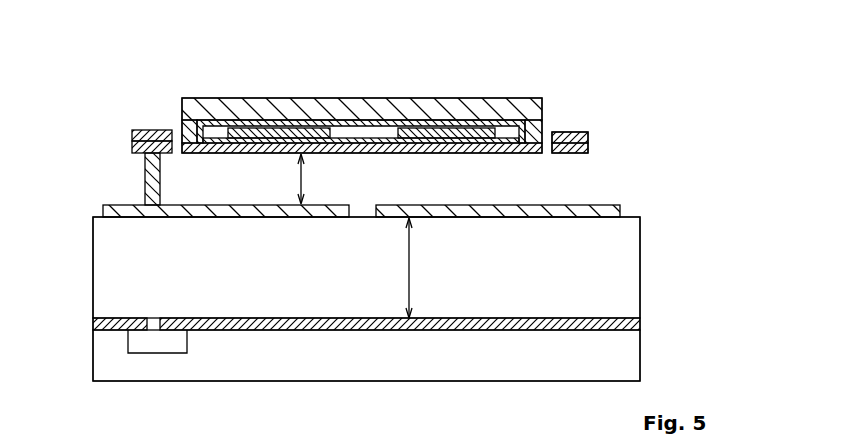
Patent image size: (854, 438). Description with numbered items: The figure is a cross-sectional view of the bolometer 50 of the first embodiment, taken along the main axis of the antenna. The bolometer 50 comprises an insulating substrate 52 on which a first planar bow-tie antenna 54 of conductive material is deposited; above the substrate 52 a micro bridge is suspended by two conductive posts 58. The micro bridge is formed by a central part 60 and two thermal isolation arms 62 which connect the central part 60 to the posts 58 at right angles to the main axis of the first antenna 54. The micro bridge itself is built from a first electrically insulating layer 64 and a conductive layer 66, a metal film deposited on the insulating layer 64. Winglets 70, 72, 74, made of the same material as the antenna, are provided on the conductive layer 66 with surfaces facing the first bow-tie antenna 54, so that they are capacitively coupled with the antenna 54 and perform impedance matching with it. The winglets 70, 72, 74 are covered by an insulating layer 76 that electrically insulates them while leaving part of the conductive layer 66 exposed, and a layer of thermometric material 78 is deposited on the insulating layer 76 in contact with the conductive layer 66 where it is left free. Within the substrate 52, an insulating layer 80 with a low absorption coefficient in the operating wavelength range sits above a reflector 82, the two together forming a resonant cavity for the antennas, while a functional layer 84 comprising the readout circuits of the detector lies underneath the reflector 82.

The bolometer 50 is at (315, 430).
The insulating substrate 52 is at (73, 217).
The first planar bow-tie antenna 54 is at (210, 205).
The conductive posts 58 is at (143, 183).
The central part 60 is at (424, 78).
The thermal isolation arms 62 is at (563, 130).
The first electrically insulating layer 64 is at (132, 148).
The conductive layer 66 is at (132, 137).
The winglet 70 is at (280, 120).
The winglet 72 is at (375, 130).
The winglet 74 is at (460, 133).
The insulating layer 76 is at (205, 128).
The layer of thermometric material 78 is at (247, 105).
The insulating layer 80 is at (605, 265).
The reflector 82 is at (635, 326).
The functional layer 84 is at (620, 358).